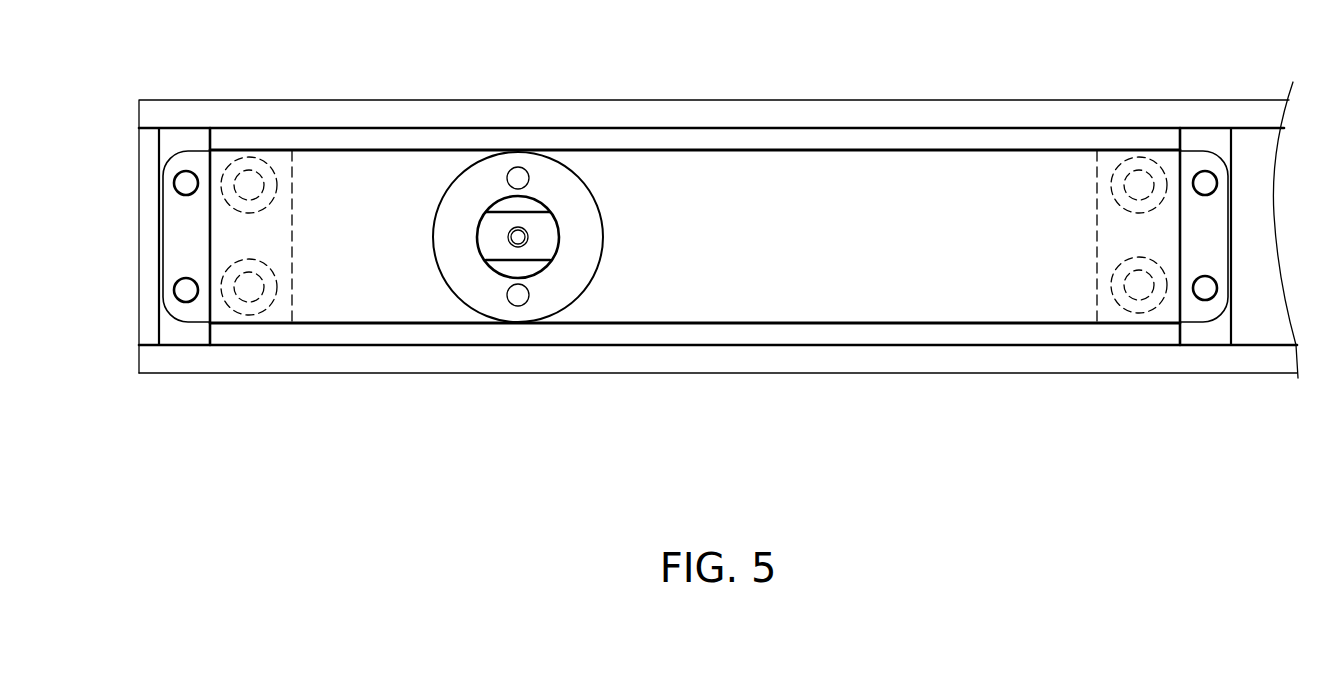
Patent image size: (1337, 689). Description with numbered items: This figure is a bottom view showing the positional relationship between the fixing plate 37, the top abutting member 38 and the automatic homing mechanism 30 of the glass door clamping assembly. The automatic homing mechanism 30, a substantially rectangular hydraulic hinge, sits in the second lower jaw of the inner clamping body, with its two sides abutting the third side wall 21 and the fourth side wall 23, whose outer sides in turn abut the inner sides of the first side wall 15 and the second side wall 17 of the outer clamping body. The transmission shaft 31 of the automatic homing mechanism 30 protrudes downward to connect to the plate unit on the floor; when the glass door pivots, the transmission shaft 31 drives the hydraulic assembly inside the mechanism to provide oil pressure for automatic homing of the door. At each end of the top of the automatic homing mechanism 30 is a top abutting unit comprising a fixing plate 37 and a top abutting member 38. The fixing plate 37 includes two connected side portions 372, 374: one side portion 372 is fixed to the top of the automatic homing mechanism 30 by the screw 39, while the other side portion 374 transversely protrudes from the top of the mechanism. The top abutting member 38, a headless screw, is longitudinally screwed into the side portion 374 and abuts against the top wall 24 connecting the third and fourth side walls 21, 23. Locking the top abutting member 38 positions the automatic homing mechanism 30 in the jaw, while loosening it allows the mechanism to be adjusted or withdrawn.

The first side wall 15 is at (647, 112).
The second side wall 17 is at (712, 362).
The third side wall 21 is at (698, 142).
The fourth side wall 23 is at (743, 335).
The top wall 24 is at (180, 332).
The automatic homing mechanism 30 is at (818, 235).
The transmission shaft 31 is at (498, 247).
The fixing plate 37 is at (180, 448).
The side portion 372 is at (280, 317).
The side portion 374 is at (195, 312).
The top abutting member 38 is at (180, 283).
The screw 39 is at (260, 280).